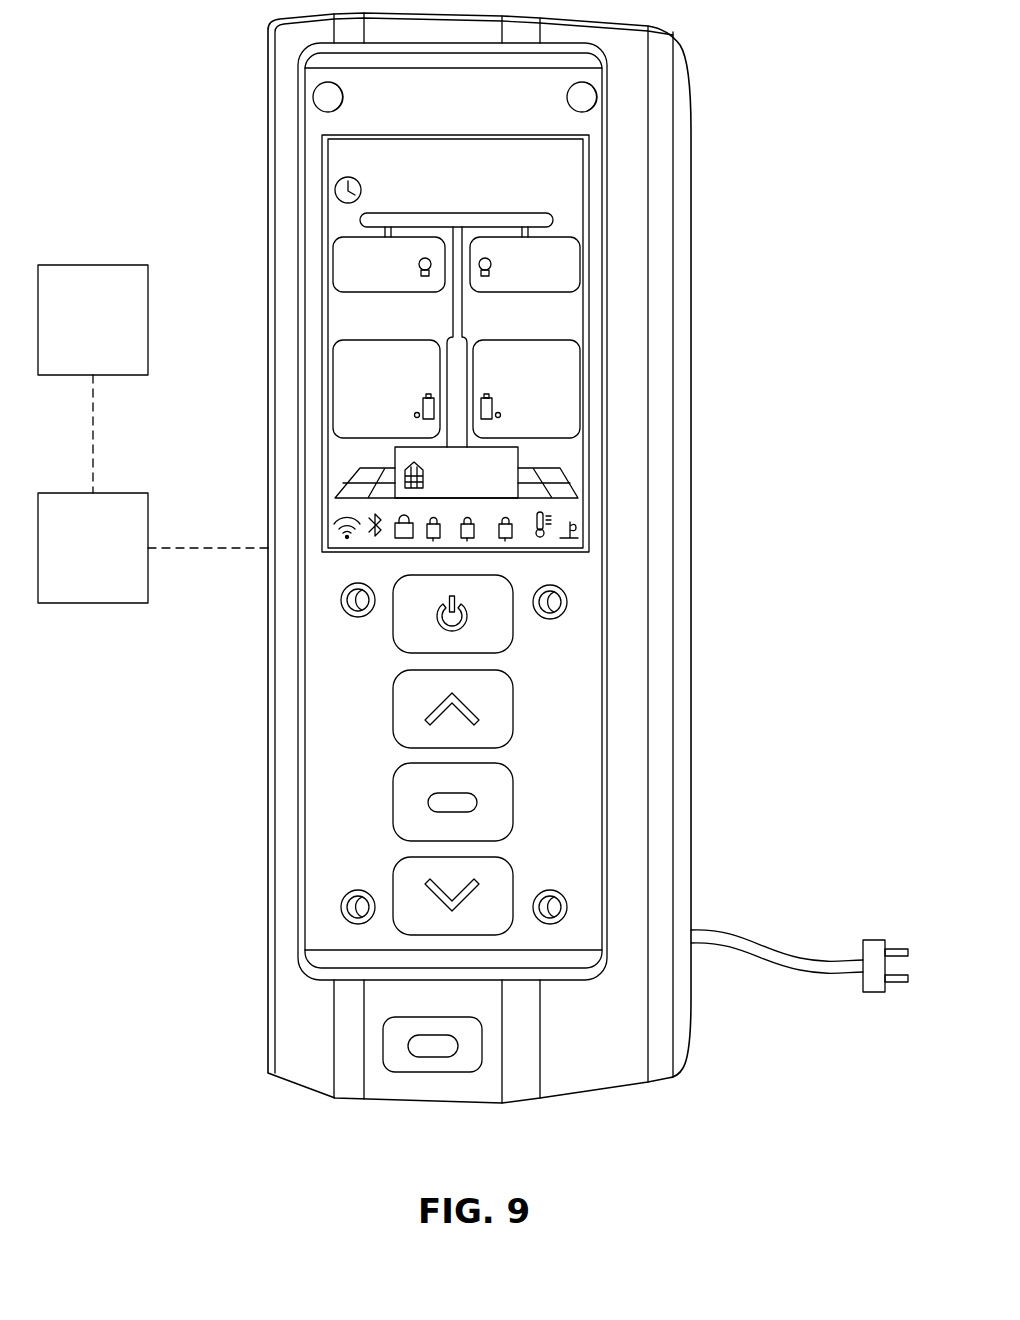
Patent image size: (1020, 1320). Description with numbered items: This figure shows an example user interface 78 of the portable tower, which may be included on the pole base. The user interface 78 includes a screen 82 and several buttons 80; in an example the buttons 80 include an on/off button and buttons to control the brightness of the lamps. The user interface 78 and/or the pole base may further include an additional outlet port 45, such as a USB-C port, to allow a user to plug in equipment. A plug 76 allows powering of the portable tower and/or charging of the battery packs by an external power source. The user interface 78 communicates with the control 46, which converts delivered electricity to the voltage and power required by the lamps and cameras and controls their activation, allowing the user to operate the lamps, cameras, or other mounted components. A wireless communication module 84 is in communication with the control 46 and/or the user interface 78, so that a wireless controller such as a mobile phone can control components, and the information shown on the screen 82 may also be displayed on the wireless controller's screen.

The outlet port 45 is at (445, 1058).
The control 46 is at (77, 333).
The plug 76 is at (802, 940).
The user interface 78 is at (745, 458).
The buttons 80 is at (527, 625).
The screen 82 is at (593, 303).
The wireless communication module 84 is at (77, 562).